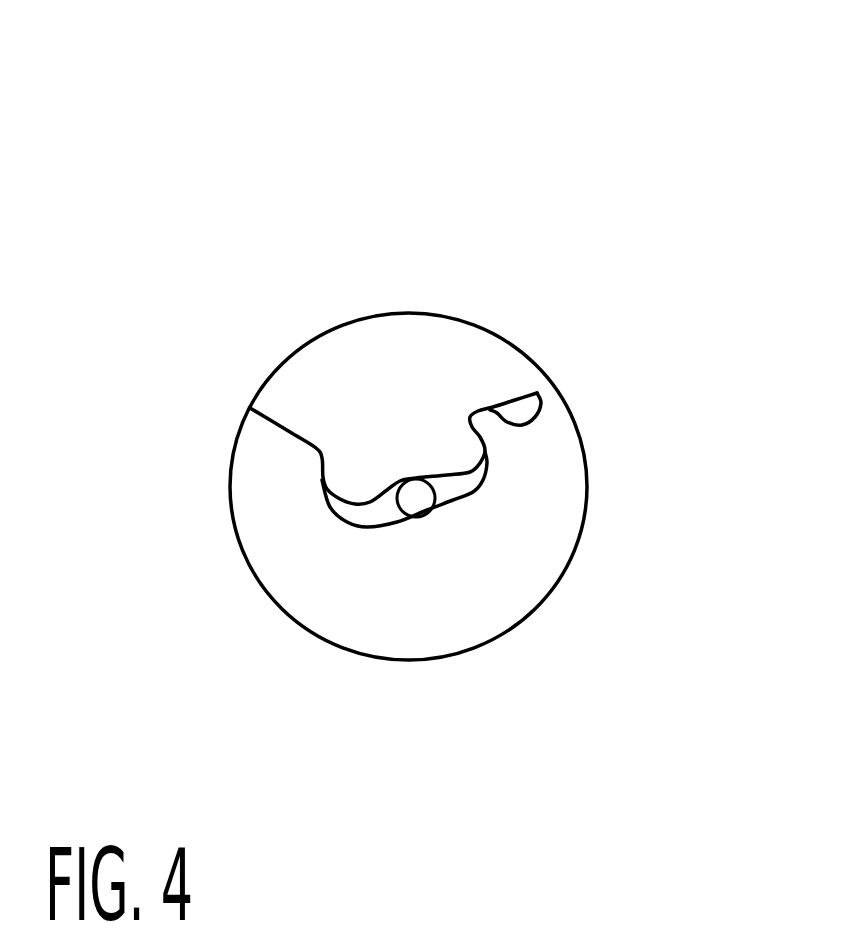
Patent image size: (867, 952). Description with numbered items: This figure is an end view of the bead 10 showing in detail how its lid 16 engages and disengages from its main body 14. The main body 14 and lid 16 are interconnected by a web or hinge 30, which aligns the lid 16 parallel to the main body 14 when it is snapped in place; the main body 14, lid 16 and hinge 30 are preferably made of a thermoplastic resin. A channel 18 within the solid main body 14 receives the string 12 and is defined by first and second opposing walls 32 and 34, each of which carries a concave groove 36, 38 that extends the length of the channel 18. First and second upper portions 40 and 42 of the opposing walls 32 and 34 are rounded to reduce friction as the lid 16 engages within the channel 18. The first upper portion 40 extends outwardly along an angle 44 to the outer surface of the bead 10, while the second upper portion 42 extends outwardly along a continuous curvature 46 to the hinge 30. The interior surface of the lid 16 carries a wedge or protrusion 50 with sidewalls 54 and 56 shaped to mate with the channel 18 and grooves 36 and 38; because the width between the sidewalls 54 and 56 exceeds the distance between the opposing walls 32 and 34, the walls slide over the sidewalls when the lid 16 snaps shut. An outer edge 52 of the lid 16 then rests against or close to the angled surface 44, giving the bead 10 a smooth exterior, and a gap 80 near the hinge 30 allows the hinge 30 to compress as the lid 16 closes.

The bead 10 is at (385, 196).
The string 12 is at (413, 507).
The main body 14 is at (367, 632).
The lid 16 is at (408, 478).
The channel 18 is at (453, 507).
The hinge 30 is at (541, 390).
The first opposing wall 32 is at (312, 489).
The second opposing wall 34 is at (490, 455).
The concave groove 36 is at (330, 505).
The concave groove 38 is at (493, 473).
The first upper portion 40 is at (313, 462).
The second upper portion 42 is at (510, 427).
The angle 44 is at (276, 423).
The continuous curvature 46 is at (473, 428).
The protrusion 50 is at (406, 362).
The outer edge 52 is at (280, 423).
The sidewall 54 is at (330, 468).
The sidewall 56 is at (470, 452).
The gap 80 is at (527, 405).